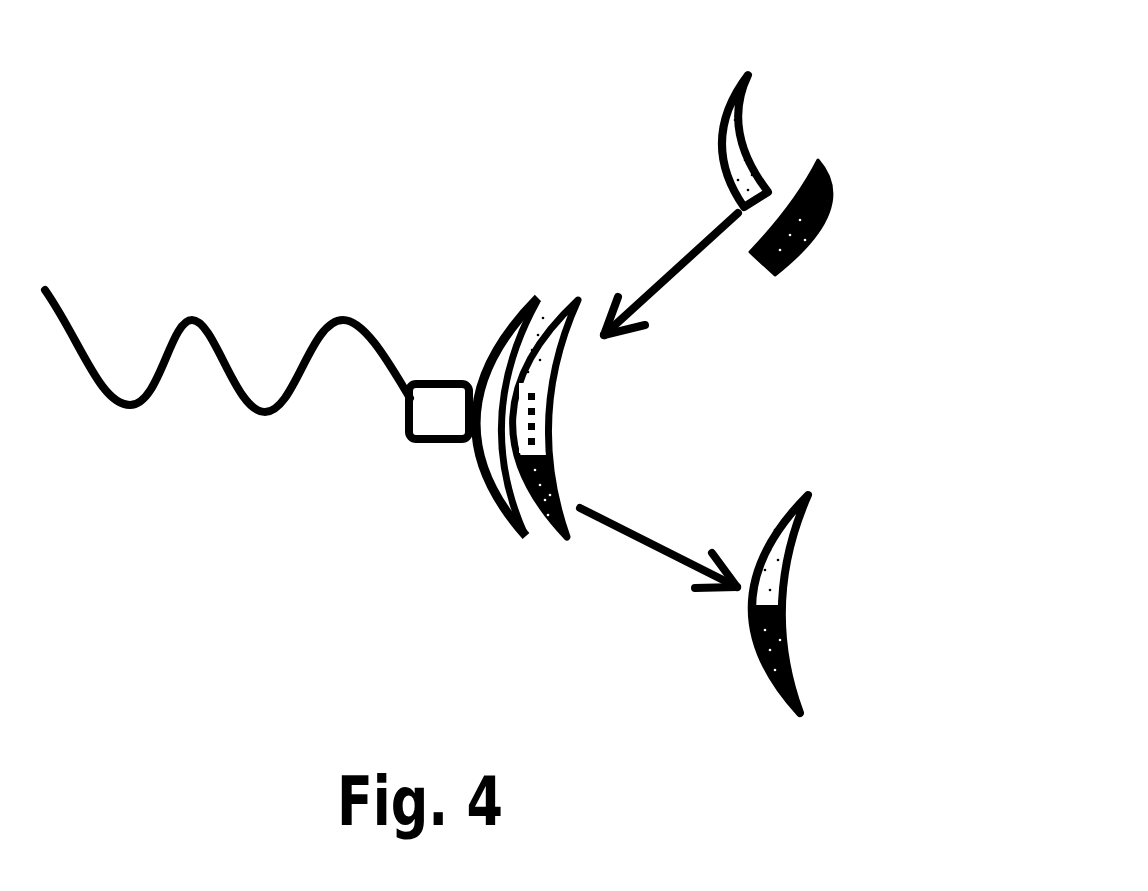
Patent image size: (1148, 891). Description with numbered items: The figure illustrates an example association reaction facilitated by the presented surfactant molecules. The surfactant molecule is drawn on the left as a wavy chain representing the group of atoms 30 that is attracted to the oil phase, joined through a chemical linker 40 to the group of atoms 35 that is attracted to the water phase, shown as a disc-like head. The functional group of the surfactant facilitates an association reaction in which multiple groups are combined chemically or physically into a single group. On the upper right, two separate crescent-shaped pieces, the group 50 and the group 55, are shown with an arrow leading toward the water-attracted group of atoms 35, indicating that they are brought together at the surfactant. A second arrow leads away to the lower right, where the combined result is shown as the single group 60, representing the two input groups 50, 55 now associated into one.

The group of atoms attracted to the oil phase 30 is at (230, 392).
The chemical linker 40 is at (423, 447).
The group of atoms attracted to the water phase 35 is at (500, 308).
The group 50 is at (752, 133).
The group 55 is at (826, 168).
The single group 60 is at (803, 495).